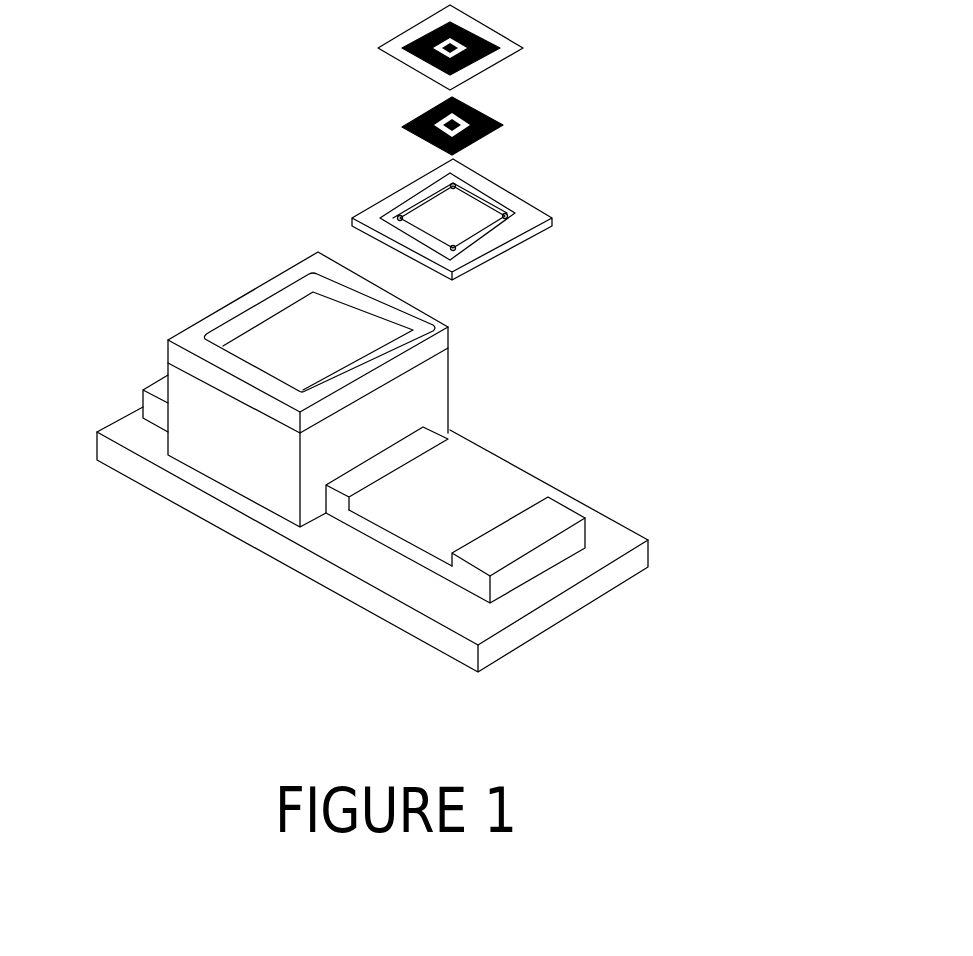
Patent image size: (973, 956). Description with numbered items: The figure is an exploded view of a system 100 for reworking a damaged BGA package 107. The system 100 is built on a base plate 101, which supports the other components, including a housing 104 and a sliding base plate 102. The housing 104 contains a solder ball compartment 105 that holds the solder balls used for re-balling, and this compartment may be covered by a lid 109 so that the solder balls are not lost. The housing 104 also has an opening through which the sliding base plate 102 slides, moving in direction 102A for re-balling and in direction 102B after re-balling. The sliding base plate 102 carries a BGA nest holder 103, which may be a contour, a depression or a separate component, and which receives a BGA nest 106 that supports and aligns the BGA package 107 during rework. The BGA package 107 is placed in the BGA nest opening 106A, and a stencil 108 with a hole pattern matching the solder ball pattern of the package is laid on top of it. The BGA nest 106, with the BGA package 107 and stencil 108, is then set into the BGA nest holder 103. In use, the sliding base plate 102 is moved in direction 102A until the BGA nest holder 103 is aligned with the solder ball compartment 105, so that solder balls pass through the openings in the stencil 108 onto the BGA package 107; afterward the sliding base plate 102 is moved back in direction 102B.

The system 100 is at (628, 615).
The base plate 101 is at (665, 514).
The sliding base plate 102 is at (584, 508).
The direction 102A is at (203, 553).
The direction 102B is at (343, 678).
The BGA nest holder 103 is at (457, 477).
The housing 104 is at (499, 389).
The solder ball compartment 105 is at (254, 304).
The BGA nest 106 is at (596, 217).
The BGA nest opening 106A is at (491, 202).
The BGA package 107 is at (577, 127).
The stencil 108 is at (575, 41).
The lid 109 is at (520, 326).